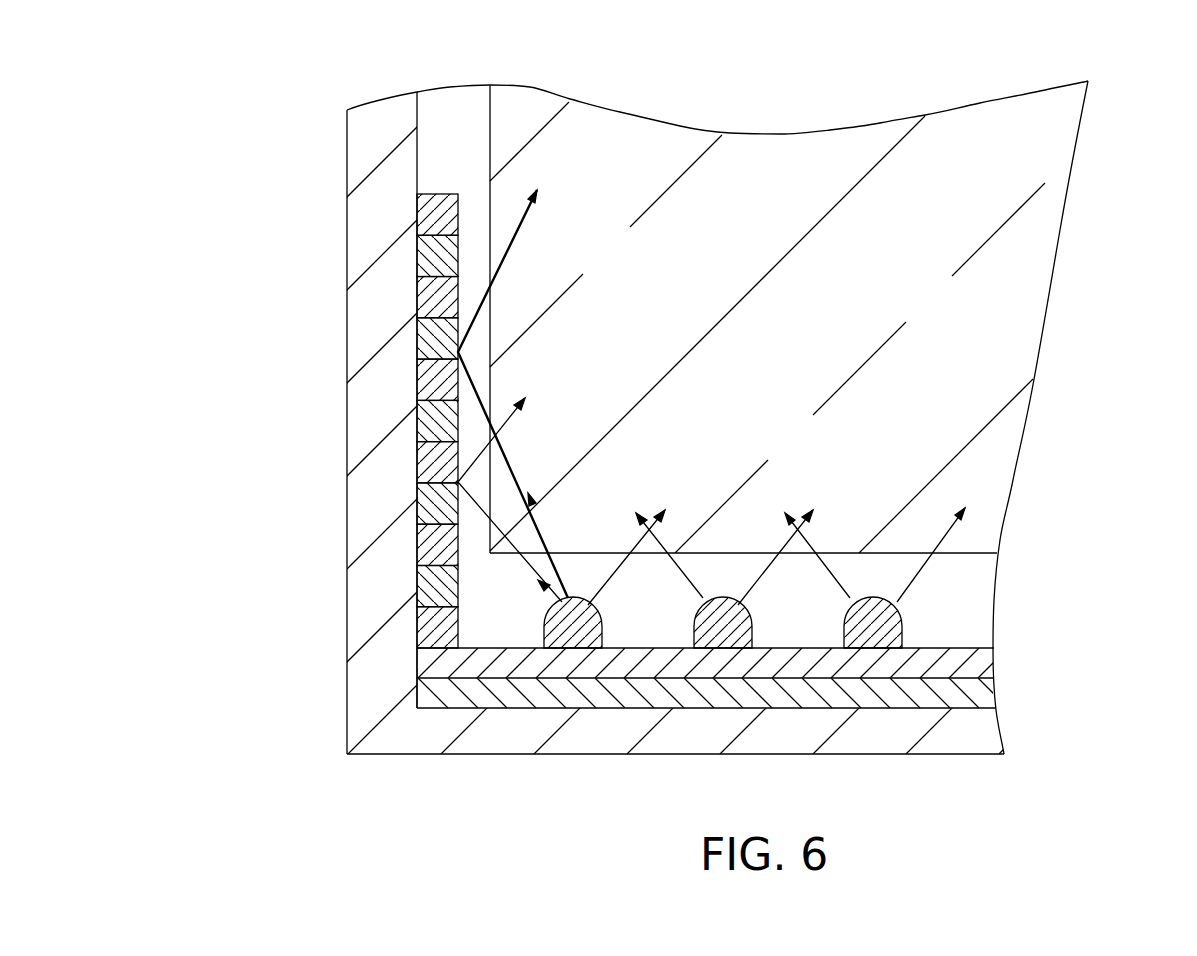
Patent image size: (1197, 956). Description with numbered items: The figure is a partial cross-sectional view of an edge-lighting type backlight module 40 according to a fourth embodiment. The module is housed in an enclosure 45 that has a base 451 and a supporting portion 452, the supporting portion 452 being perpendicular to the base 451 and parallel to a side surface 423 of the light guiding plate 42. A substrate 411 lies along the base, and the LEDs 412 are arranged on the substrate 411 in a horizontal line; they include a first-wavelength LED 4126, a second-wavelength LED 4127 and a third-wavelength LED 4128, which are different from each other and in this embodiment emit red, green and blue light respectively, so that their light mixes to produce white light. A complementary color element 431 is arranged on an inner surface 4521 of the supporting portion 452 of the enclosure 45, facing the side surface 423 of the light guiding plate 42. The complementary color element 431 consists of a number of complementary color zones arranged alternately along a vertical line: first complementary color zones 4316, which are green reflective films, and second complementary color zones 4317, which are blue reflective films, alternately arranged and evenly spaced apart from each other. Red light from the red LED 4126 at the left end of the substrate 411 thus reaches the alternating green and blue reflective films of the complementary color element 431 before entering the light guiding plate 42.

The edge-lighting type backlight module 40 is at (708, 93).
The light guiding plate 42 is at (995, 166).
The side surface 423 is at (490, 157).
The complementary color element 431 is at (258, 238).
The first complementary color zones 4316 is at (435, 297).
The second complementary color zones 4317 is at (440, 260).
The enclosure 45 is at (210, 563).
The base 451 is at (443, 727).
The supporting portion 452 is at (375, 580).
The inner surface 4521 is at (418, 113).
The substrate 411 is at (973, 693).
The LEDs 412 is at (905, 778).
The first-wavelength LED 4126 is at (573, 625).
The second-wavelength LED 4127 is at (723, 628).
The third-wavelength LED 4128 is at (873, 628).